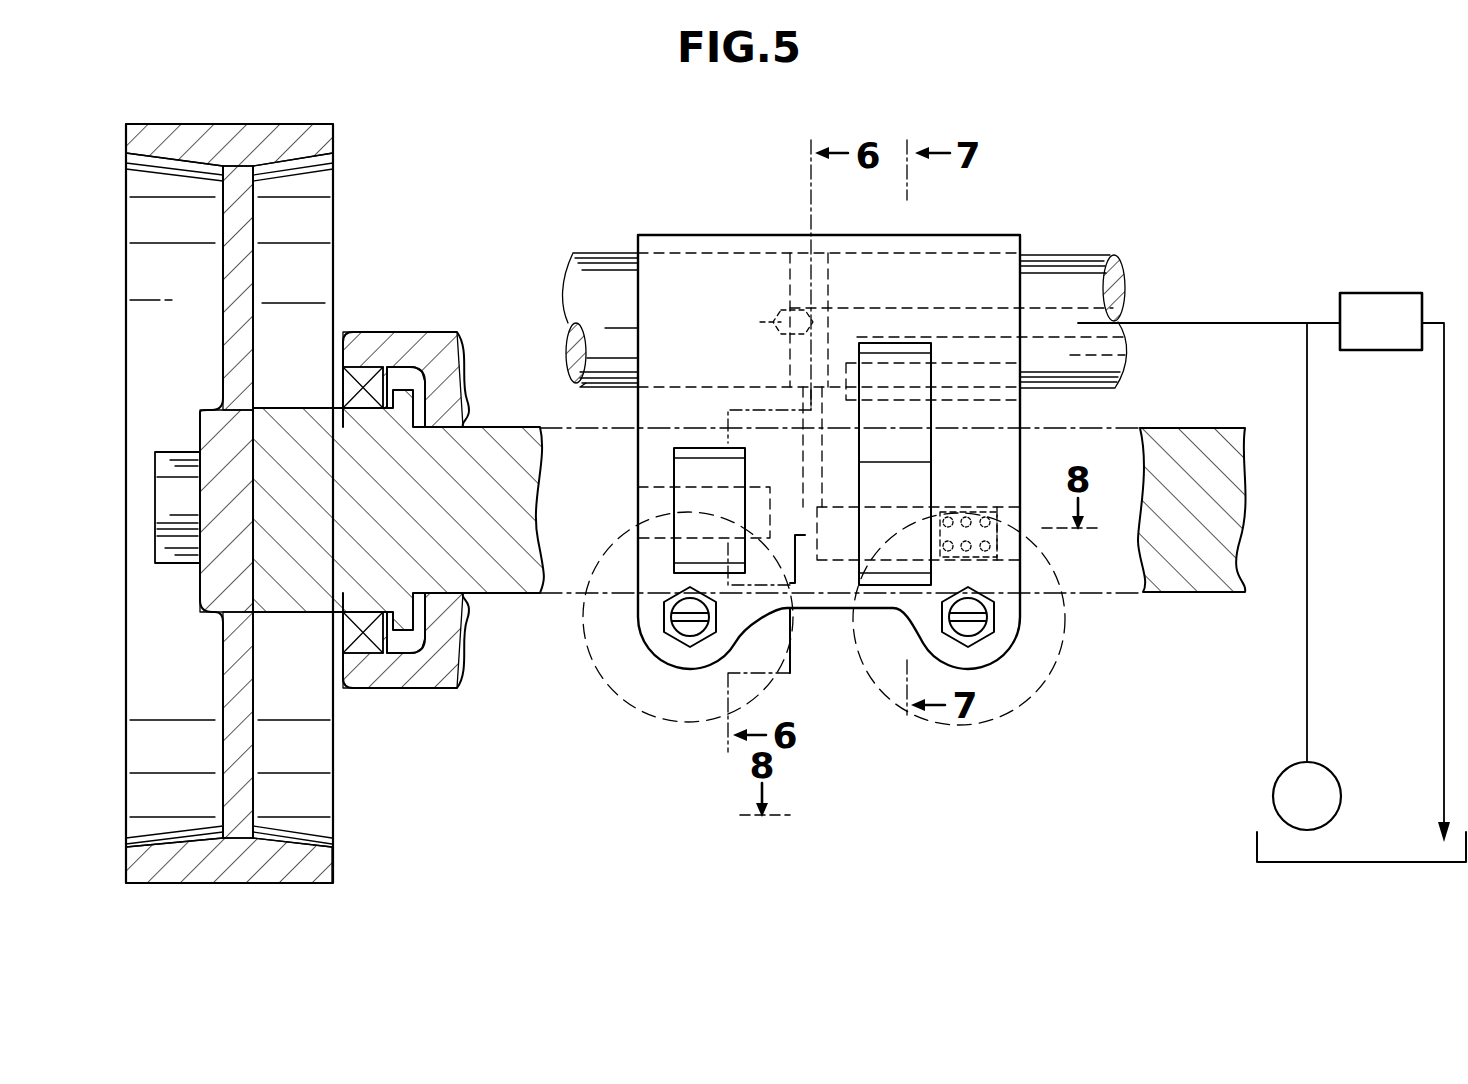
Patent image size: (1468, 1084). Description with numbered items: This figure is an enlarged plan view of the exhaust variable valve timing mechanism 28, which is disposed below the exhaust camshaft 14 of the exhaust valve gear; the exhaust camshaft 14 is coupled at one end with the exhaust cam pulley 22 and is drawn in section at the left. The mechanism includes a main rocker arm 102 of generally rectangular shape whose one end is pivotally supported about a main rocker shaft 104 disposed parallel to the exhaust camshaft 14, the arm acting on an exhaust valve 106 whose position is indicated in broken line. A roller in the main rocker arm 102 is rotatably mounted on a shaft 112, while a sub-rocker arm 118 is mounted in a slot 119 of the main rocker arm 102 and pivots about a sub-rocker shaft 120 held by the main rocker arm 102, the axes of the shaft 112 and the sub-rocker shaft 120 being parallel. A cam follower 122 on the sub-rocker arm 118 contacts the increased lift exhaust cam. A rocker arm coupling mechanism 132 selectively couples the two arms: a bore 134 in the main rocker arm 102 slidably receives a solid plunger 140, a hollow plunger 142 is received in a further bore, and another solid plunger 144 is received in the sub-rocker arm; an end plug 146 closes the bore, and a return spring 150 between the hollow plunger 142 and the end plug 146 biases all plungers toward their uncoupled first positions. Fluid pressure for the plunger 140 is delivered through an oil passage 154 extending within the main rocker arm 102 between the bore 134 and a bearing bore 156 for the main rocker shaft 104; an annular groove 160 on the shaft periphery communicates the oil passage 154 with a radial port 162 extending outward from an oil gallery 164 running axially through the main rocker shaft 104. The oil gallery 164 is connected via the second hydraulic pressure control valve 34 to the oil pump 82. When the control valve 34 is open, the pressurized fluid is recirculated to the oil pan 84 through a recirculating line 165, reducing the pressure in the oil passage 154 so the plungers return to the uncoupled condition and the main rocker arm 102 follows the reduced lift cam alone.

The exhaust camshaft 14 is at (1165, 600).
The exhaust cam pulley 22 is at (262, 124).
The exhaust variable valve timing mechanism 28 is at (676, 222).
The second hydraulic pressure control valve 34 is at (1358, 294).
The oil pump 82 is at (1275, 783).
The oil pan 84 is at (1257, 848).
The main rocker arm 102 is at (645, 235).
The main rocker shaft 104 is at (1043, 308).
The exhaust valve 106 is at (600, 690).
The shaft 112 is at (693, 483).
The sub-rocker arm 118 is at (923, 440).
The slot 119 is at (903, 342).
The sub-rocker shaft 120 is at (957, 357).
The cam follower 122 is at (915, 478).
The rocker arm coupling mechanism 132 is at (940, 503).
The bore 134 is at (792, 648).
The solid plunger 140 is at (845, 548).
The hollow plunger 142 is at (962, 545).
The solid plunger 144 is at (885, 545).
The end plug 146 is at (1003, 545).
The return spring 150 is at (990, 558).
The oil passage 154 is at (860, 252).
The bearing bore 156 is at (687, 387).
The annular groove 160 is at (800, 250).
The radial port 162 is at (805, 317).
The oil gallery 164 is at (1048, 308).
The recirculating line 165 is at (1443, 535).